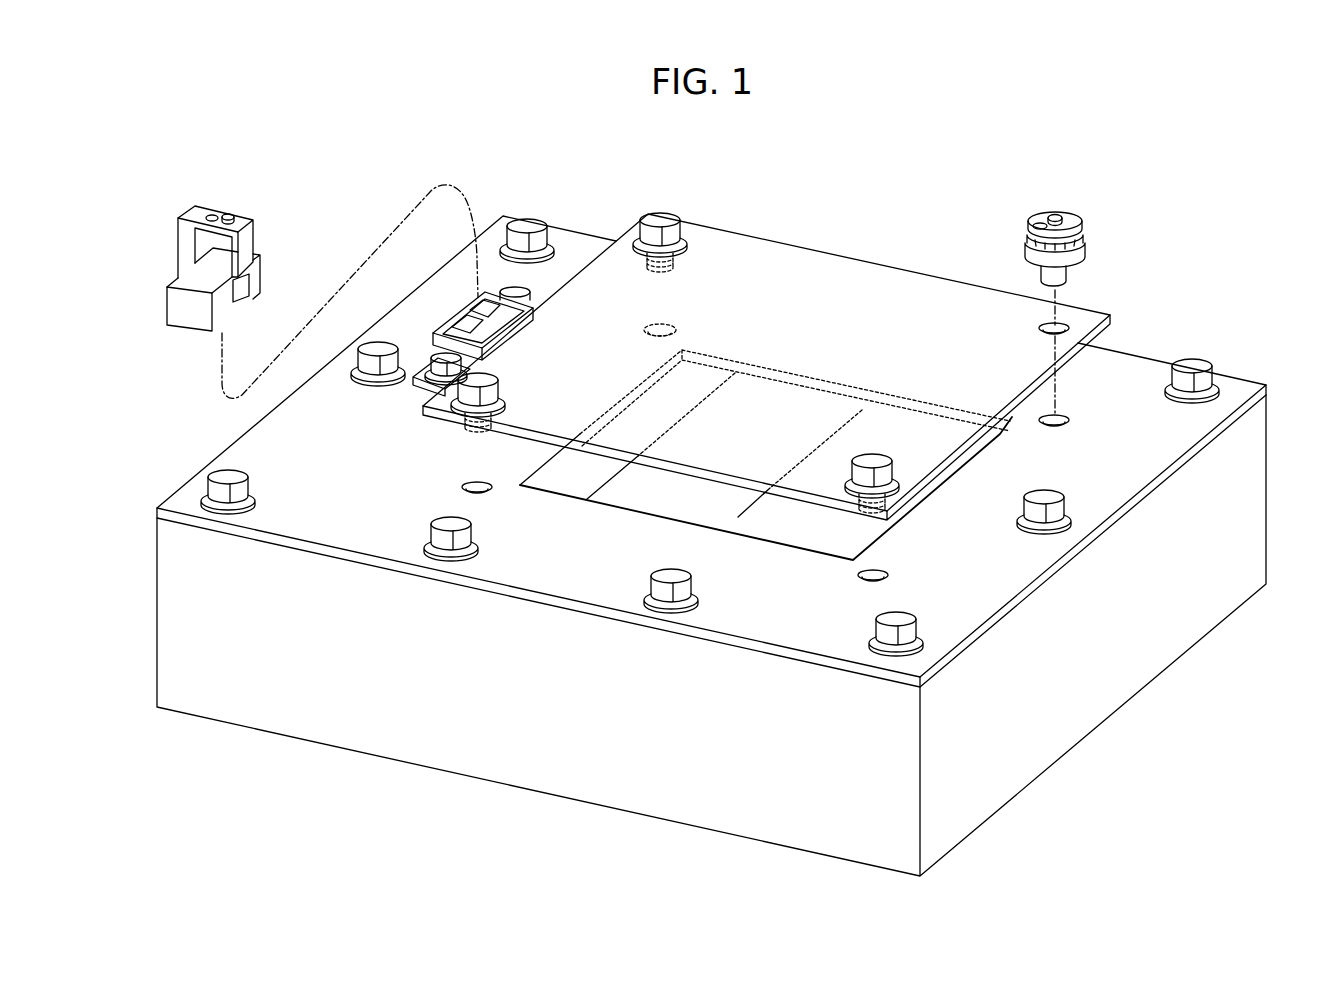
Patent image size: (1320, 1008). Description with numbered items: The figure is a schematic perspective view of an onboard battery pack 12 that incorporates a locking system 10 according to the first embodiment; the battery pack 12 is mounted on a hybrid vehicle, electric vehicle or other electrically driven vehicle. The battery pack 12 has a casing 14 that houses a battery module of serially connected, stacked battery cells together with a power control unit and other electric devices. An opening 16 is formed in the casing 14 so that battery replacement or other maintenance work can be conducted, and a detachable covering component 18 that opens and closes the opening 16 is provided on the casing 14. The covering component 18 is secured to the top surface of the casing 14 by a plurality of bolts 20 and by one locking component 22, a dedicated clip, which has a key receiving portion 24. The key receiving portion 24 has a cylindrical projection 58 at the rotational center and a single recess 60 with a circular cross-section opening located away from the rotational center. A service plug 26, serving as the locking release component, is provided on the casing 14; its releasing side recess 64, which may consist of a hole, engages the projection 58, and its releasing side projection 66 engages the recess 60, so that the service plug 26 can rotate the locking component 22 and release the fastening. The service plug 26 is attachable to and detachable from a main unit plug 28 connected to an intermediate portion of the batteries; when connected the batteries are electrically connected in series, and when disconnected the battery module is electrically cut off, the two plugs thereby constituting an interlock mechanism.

The locking system 10 is at (807, 141).
The onboard battery pack 12 is at (772, 141).
The casing 14 is at (329, 750).
The opening 16 is at (830, 530).
The covering component 18 is at (831, 258).
The bolts 20 is at (668, 217).
The locking component 22 is at (1092, 231).
The key receiving portion 24 is at (960, 228).
The service plug 26 is at (260, 239).
The main unit plug 28 is at (455, 312).
The projection 58 is at (1055, 214).
The recess 60 is at (1040, 225).
The releasing side recess 64 is at (212, 213).
The releasing side projection 66 is at (230, 214).